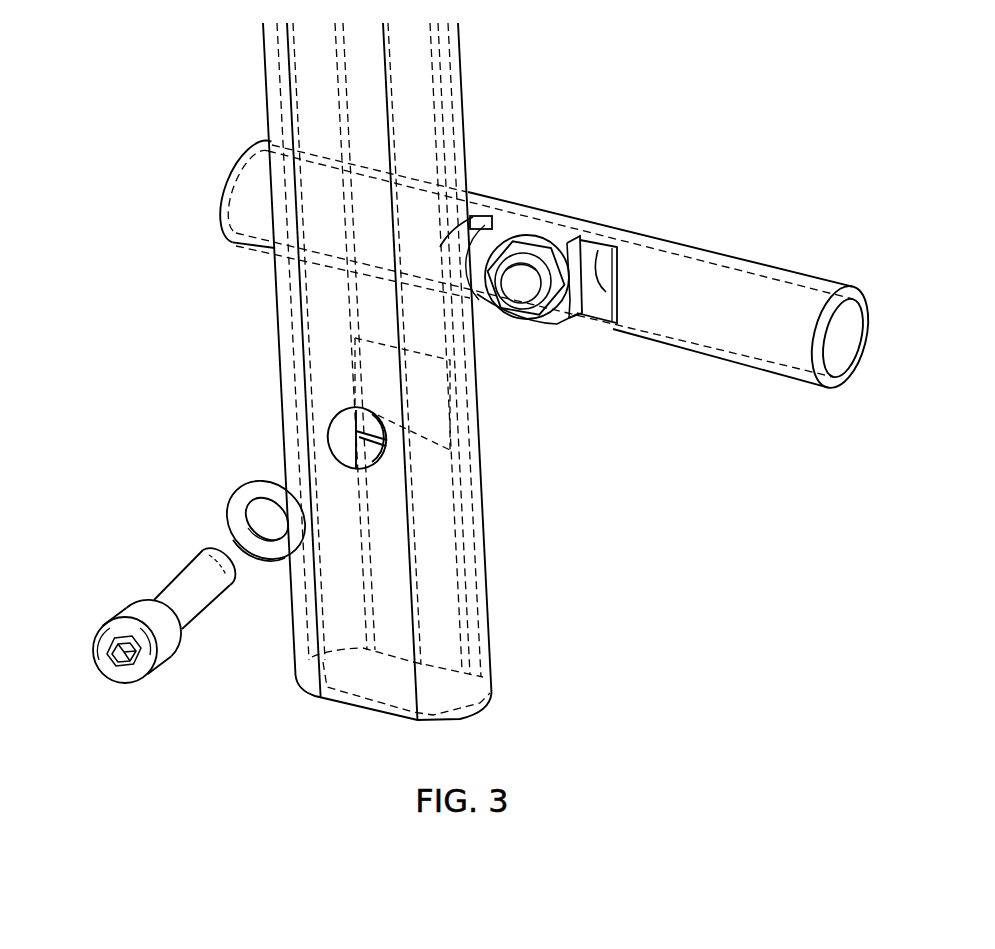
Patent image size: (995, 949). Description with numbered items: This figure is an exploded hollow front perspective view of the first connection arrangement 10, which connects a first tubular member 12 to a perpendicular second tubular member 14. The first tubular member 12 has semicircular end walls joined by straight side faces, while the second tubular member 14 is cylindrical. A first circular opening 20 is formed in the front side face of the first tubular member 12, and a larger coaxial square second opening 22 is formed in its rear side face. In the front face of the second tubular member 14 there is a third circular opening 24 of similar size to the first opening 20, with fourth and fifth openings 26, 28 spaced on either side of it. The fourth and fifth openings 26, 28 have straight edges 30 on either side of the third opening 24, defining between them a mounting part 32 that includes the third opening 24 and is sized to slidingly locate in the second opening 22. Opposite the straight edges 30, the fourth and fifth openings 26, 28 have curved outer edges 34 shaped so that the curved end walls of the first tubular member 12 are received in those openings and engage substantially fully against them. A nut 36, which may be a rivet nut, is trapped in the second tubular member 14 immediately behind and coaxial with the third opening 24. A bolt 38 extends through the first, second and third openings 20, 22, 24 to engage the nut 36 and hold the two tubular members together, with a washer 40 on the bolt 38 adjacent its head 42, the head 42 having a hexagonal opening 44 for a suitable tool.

The connection arrangement 10 is at (209, 636).
The first tubular member 12 is at (440, 624).
The second tubular member 14 is at (735, 312).
The first circular opening 20 is at (330, 432).
The second opening 22 is at (432, 407).
The third circular opening 24 is at (553, 227).
The fourth opening 26 is at (480, 243).
The fifth opening 28 is at (614, 250).
The straight edges 30 is at (578, 312).
The mounting part 32 is at (508, 233).
The curved outer edges 34 is at (614, 292).
The nut 36 is at (573, 230).
The bolt 38 is at (190, 578).
The washer 40 is at (282, 557).
The head 42 is at (135, 608).
The hexagonal opening 44 is at (110, 655).